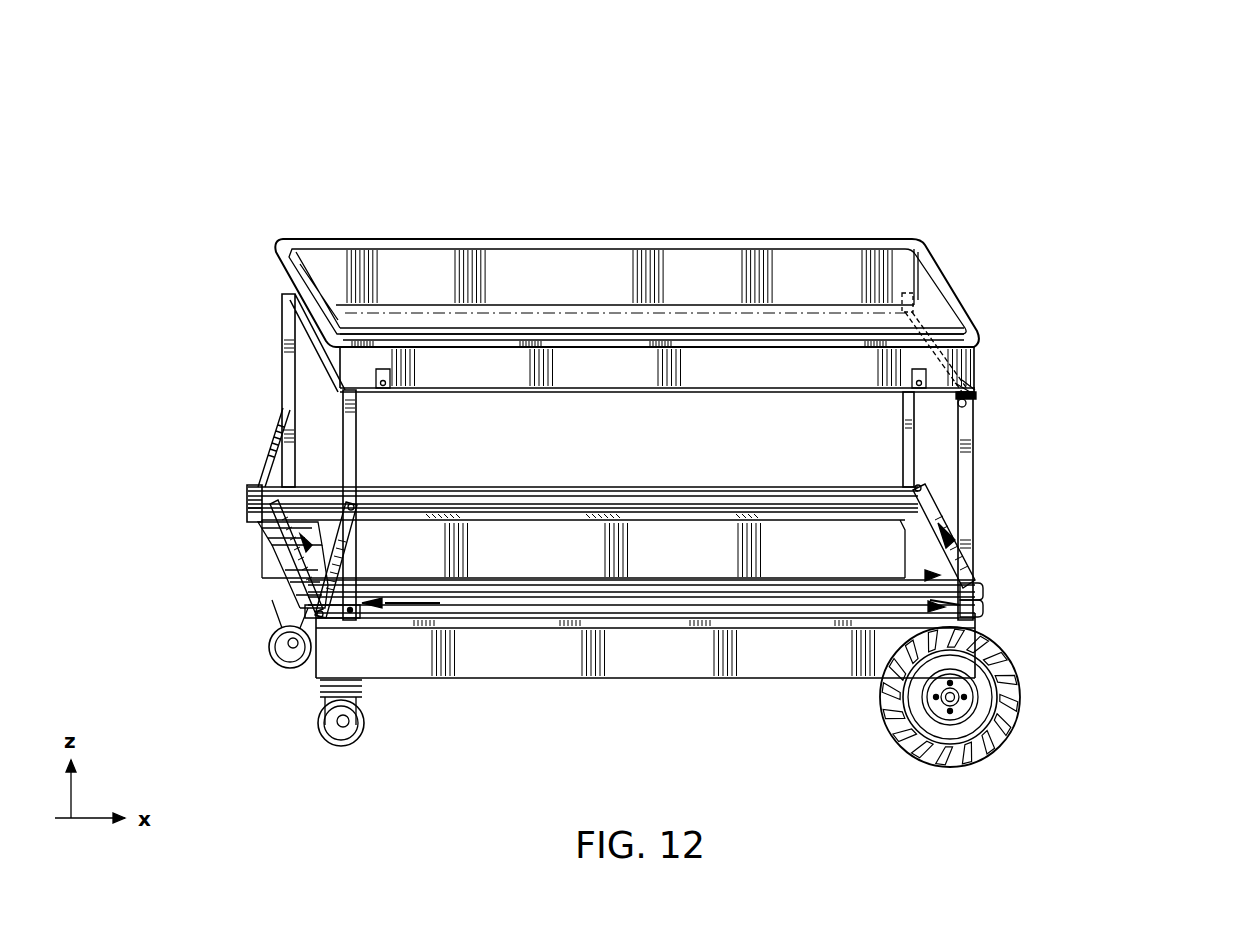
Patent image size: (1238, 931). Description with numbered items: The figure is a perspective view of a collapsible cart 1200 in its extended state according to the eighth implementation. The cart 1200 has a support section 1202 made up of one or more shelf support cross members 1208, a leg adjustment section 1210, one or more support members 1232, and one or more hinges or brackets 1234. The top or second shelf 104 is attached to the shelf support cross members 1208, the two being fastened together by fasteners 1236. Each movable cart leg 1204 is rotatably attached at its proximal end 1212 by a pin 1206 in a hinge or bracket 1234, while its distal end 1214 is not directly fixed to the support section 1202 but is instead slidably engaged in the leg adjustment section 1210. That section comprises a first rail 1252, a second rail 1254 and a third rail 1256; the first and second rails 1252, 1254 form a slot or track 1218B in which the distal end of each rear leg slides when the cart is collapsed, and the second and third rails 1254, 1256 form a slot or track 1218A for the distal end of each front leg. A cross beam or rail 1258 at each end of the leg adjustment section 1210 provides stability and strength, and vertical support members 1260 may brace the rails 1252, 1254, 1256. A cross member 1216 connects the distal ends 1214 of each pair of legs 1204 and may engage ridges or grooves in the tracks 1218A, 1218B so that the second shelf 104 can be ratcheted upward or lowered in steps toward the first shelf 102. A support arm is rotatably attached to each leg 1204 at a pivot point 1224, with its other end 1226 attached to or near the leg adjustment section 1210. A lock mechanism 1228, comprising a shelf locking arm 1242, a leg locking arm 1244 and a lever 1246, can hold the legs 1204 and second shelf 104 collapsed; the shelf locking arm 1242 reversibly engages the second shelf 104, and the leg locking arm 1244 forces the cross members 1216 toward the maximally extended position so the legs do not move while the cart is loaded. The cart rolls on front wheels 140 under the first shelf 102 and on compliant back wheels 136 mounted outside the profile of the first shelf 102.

The collapsible cart 1200 is at (325, 157).
The second shelf 104 is at (660, 273).
The hinge or bracket 1234 is at (916, 296).
The shelf support cross member 1208 is at (925, 306).
The fastener 1236 is at (390, 378).
The movable cart leg 1204 is at (290, 373).
The support member 1232 is at (535, 394).
The proximal end 1212 is at (966, 385).
The pin 1206 is at (972, 396).
The support section 1202 is at (1103, 393).
The pivot point 1224 is at (392, 500).
The first rail 1252 is at (640, 490).
The second rail 1254 is at (730, 488).
The third rail 1256 is at (775, 490).
The cross member 1216 is at (246, 510).
The vertical support member 1260 is at (253, 490).
The lock mechanism 1228 is at (256, 535).
The lever 1246 is at (272, 594).
The shelf locking arm 1242 is at (306, 516).
The leg locking arm 1244 is at (346, 556).
The other end of the support arm 1226 is at (276, 650).
The distal end 1214 is at (360, 612).
The leg adjustment section 1210 is at (1003, 545).
The cross beam or rail 1258 is at (938, 526).
The slot or track 1218B is at (978, 610).
The slot or track 1218A is at (975, 620).
The first shelf 102 is at (650, 658).
The front wheel 140 is at (345, 747).
The back wheel 136 is at (1005, 746).